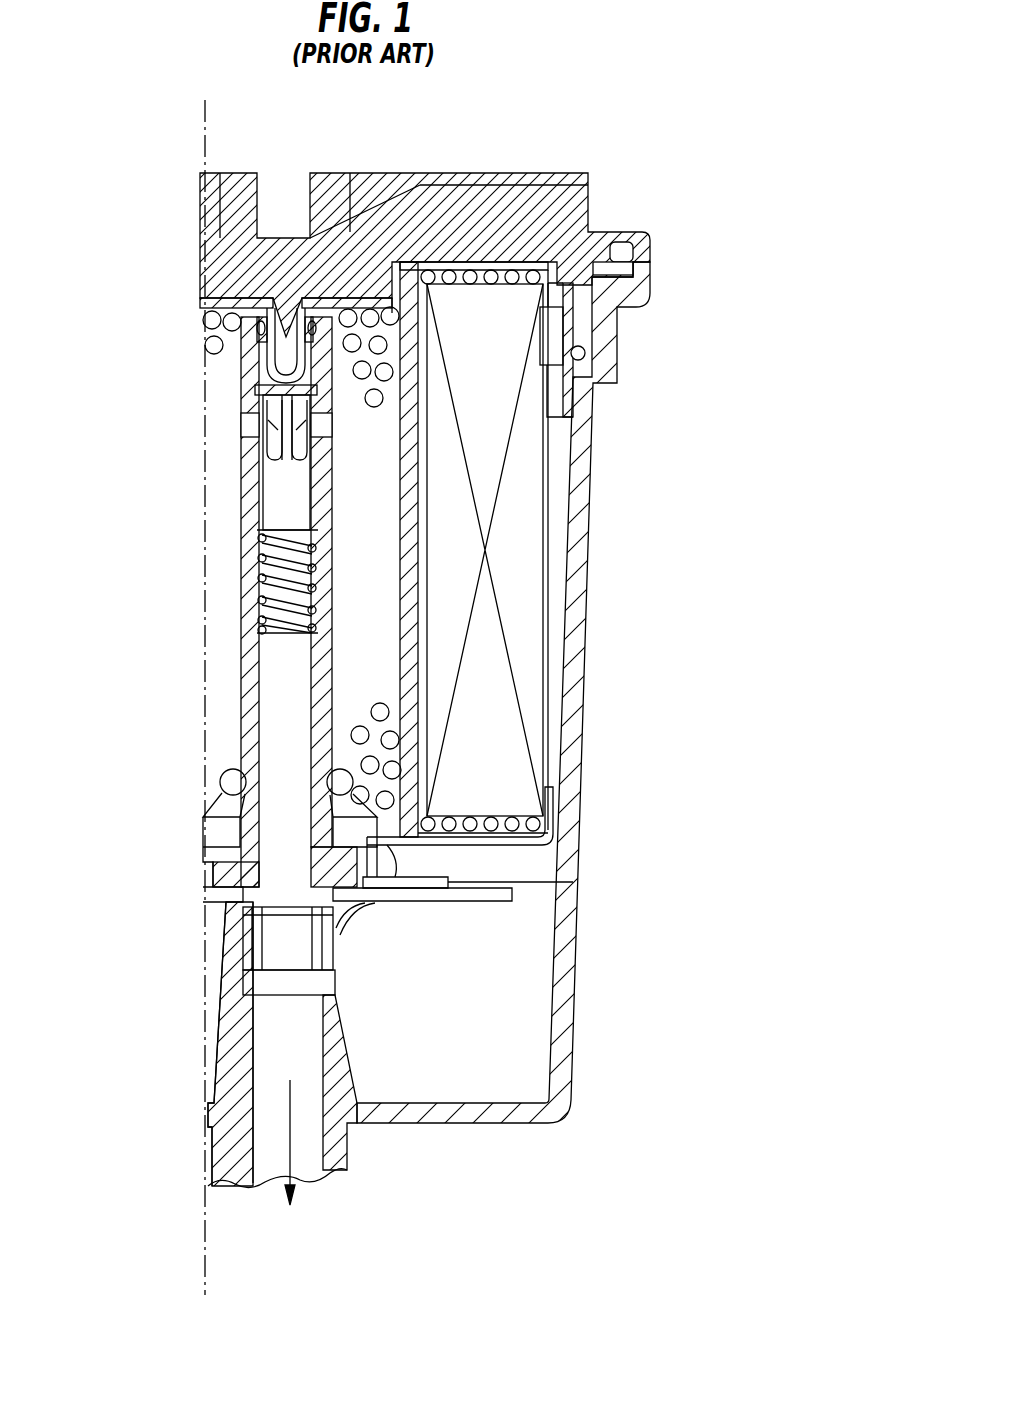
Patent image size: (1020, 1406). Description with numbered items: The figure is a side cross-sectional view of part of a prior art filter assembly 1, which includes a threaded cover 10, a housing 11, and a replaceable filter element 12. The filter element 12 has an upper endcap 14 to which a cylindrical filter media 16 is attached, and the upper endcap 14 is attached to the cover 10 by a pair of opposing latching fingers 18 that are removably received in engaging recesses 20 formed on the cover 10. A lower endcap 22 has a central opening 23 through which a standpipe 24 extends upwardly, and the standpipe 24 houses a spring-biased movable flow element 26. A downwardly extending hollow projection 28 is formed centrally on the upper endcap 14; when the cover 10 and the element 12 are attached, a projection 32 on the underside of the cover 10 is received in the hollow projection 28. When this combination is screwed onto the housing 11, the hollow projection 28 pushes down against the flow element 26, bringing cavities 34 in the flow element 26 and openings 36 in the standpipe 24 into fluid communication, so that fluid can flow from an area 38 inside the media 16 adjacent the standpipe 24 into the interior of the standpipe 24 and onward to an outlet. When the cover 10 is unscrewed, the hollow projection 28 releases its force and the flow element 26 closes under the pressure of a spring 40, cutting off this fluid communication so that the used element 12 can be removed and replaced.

The filter assembly 1 is at (71, 239).
The threaded cover 10 is at (485, 190).
The housing 11 is at (572, 990).
The replaceable filter element 12 is at (558, 540).
The upper endcap 14 is at (529, 268).
The cylindrical filter media 16 is at (528, 654).
The latching fingers 18 is at (568, 323).
The engaging recesses 20 is at (582, 345).
The lower endcap 22 is at (545, 828).
The central opening 23 is at (380, 843).
The standpipe 24 is at (250, 716).
The spring-biased movable flow element 26 is at (275, 512).
The hollow projection 28 is at (241, 369).
The projection 32 is at (287, 306).
The cavities 34 is at (268, 447).
The openings 36 is at (247, 432).
The area inside the media 38 is at (378, 573).
The spring 40 is at (258, 608).